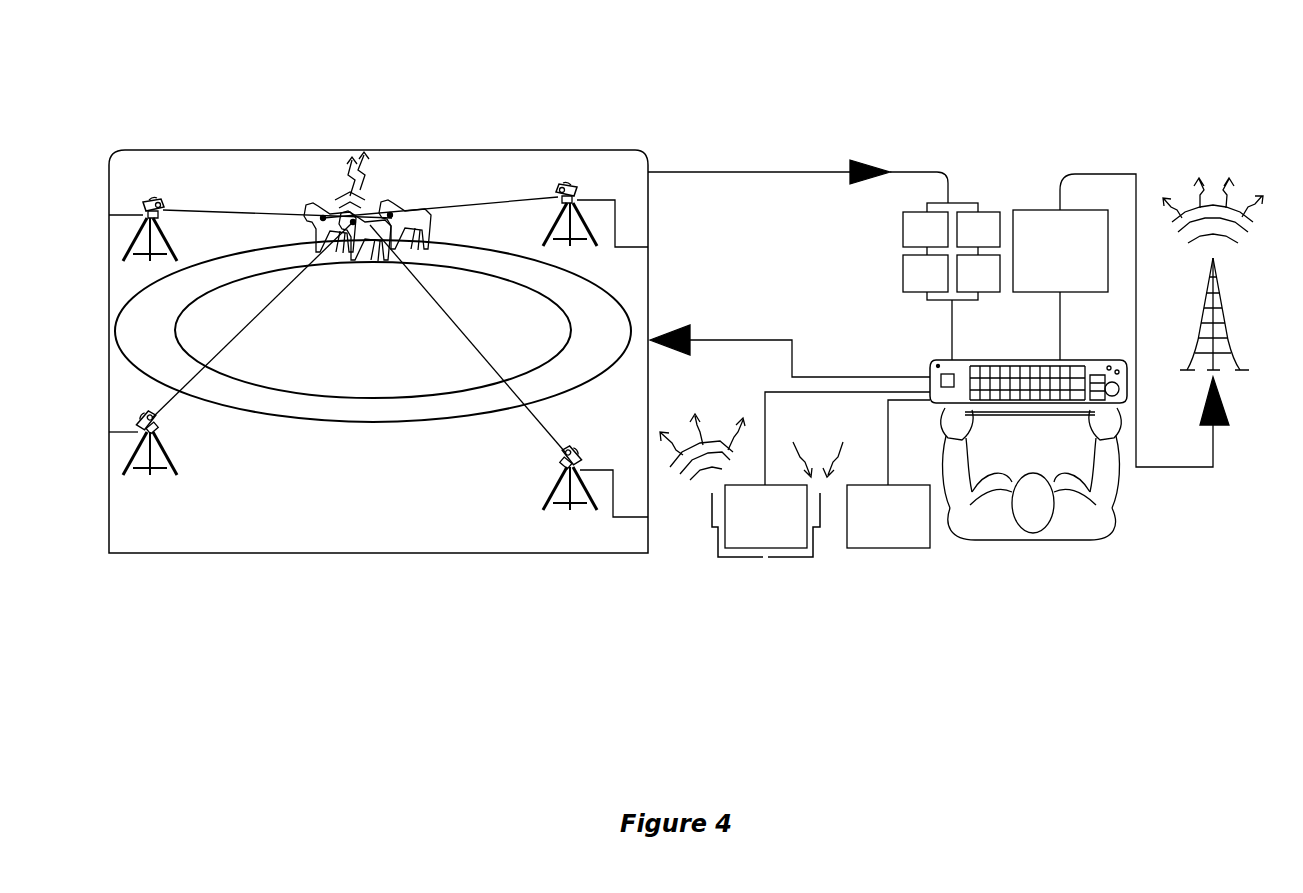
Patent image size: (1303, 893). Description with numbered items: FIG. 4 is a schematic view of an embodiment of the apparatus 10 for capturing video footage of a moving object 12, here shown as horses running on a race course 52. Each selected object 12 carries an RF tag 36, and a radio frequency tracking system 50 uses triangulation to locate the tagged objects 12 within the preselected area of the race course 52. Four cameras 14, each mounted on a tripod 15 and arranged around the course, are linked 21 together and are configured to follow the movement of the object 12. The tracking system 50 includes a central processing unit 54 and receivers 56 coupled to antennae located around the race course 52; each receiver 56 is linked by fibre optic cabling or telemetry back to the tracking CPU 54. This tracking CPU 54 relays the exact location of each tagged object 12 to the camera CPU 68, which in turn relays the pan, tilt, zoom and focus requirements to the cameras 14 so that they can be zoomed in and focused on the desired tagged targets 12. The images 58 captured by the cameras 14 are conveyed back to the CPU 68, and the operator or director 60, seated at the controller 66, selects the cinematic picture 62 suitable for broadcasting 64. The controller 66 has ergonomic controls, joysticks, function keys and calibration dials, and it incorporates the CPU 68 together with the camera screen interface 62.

The apparatus 10 is at (224, 76).
The moving object 12 is at (372, 248).
The camera 14 is at (142, 210).
The tripod 15 is at (125, 248).
The link 21 is at (320, 553).
The RF tag 36 is at (390, 215).
The radio frequency tracking system 50 is at (756, 576).
The race course 52 is at (360, 412).
The central processing unit 54 is at (778, 523).
The receiver 56 is at (820, 515).
The images 58 is at (942, 233).
The operator 60 is at (1068, 520).
The cinematic picture 62 is at (1073, 246).
The broadcasting 64 is at (1107, 172).
The controller 66 is at (935, 360).
The camera CPU 68 is at (900, 523).